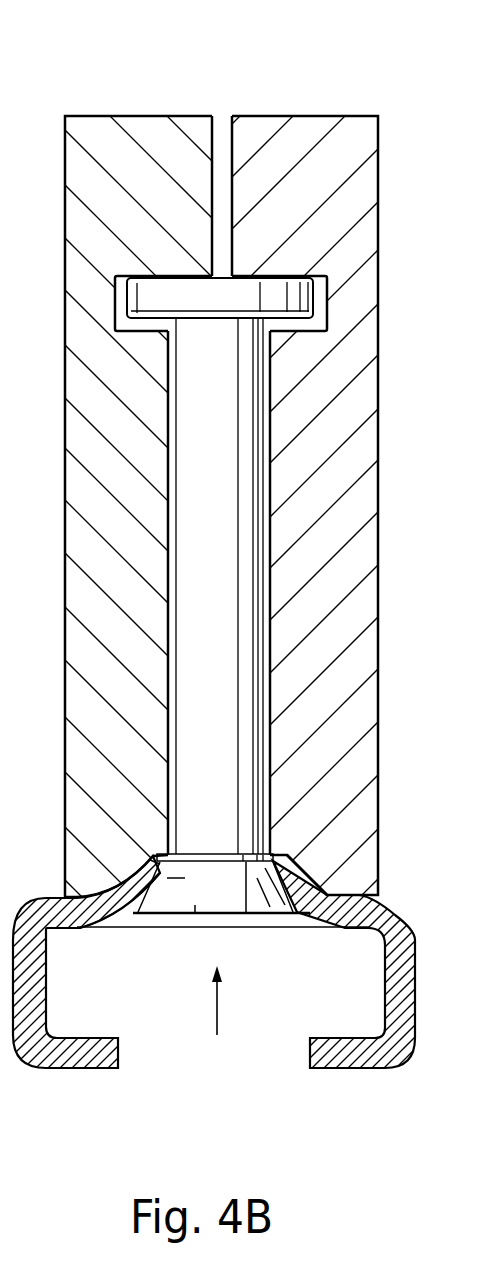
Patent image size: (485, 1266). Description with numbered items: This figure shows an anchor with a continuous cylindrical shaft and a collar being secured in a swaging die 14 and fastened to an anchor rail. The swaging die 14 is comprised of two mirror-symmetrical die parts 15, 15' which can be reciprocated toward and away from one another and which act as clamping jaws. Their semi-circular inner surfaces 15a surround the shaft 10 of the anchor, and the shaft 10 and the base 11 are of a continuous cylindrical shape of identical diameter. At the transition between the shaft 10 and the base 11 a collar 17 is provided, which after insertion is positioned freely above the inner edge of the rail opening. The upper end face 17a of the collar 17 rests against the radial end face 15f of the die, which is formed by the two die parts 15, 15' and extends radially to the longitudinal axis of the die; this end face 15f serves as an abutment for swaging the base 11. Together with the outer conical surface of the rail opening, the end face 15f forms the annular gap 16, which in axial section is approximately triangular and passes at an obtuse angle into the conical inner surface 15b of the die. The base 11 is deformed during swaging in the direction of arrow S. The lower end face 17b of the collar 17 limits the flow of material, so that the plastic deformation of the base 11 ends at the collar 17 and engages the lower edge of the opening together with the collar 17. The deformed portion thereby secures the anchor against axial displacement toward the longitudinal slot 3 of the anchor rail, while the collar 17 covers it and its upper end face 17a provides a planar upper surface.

The die part 15 is at (141, 523).
The die part 15' is at (307, 516).
The swaging die 14 is at (223, 94).
The inner surface 15a is at (270, 428).
The shaft 10 is at (225, 612).
The upper end face 17a is at (203, 856).
The collar 17 is at (226, 862).
The lower end face 17b is at (252, 892).
The annular gap 16 is at (155, 856).
The end face 15f is at (280, 846).
The longitudinal slot 3 is at (267, 1055).
The conical inner surface 15b is at (75, 900).
The base 11 is at (175, 903).
The arrow S is at (222, 1000).